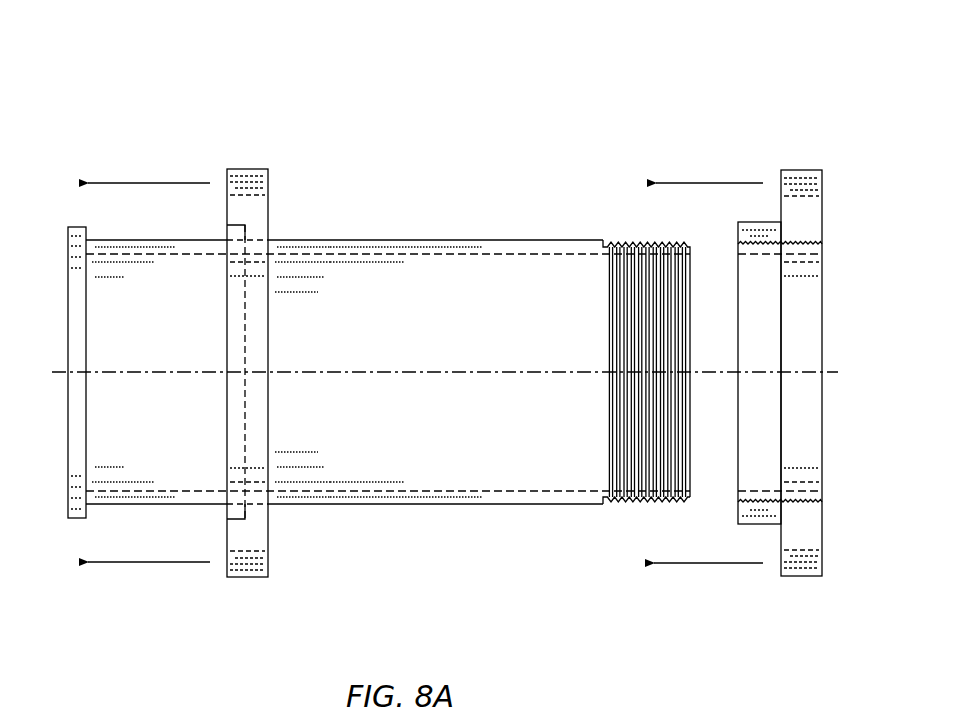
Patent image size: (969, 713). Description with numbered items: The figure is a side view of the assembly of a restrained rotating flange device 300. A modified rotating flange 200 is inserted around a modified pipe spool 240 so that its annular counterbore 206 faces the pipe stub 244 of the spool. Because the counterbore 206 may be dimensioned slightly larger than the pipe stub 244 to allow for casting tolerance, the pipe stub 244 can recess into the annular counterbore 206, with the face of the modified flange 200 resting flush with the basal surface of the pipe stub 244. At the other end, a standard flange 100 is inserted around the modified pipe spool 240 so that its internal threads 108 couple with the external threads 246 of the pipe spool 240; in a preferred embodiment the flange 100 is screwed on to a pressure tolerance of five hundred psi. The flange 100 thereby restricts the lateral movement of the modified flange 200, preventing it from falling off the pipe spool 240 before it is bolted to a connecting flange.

The standard flange 100 is at (800, 165).
The internal threads 108 is at (806, 492).
The modified rotating flange 200 is at (247, 160).
The annular counterbore 206 is at (226, 240).
The modified pipe spool 240 is at (385, 518).
The pipe stub 244 is at (68, 232).
The external threads 246 is at (620, 505).
The restrained rotating flange device 300 is at (460, 122).